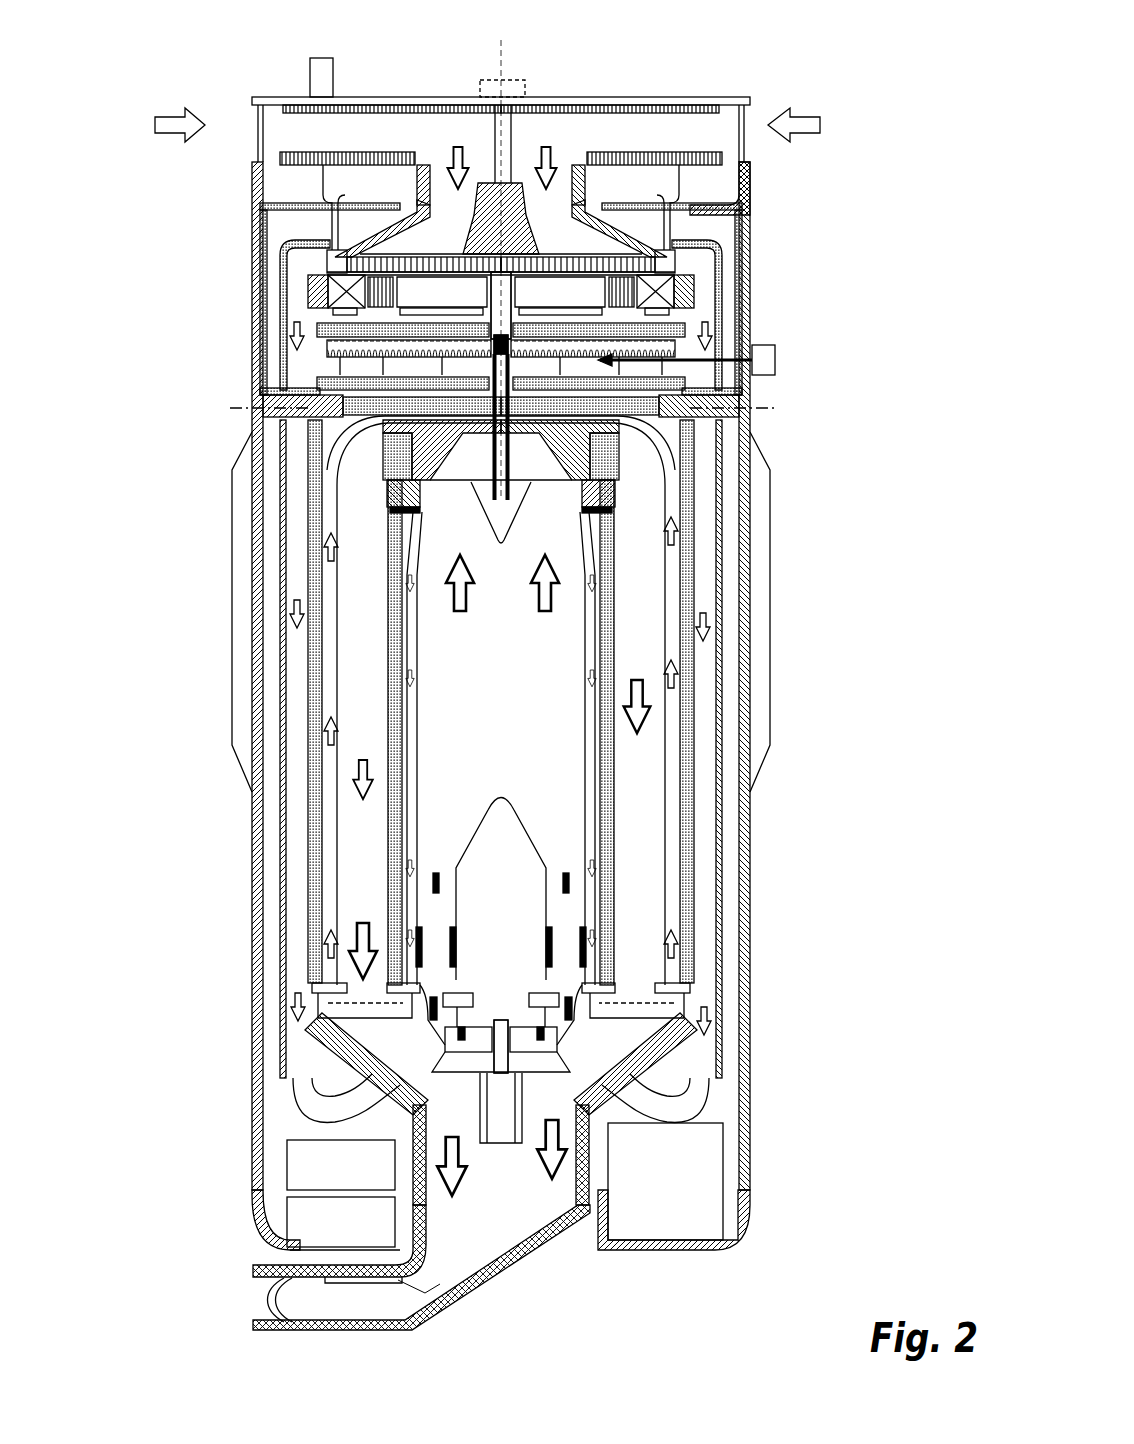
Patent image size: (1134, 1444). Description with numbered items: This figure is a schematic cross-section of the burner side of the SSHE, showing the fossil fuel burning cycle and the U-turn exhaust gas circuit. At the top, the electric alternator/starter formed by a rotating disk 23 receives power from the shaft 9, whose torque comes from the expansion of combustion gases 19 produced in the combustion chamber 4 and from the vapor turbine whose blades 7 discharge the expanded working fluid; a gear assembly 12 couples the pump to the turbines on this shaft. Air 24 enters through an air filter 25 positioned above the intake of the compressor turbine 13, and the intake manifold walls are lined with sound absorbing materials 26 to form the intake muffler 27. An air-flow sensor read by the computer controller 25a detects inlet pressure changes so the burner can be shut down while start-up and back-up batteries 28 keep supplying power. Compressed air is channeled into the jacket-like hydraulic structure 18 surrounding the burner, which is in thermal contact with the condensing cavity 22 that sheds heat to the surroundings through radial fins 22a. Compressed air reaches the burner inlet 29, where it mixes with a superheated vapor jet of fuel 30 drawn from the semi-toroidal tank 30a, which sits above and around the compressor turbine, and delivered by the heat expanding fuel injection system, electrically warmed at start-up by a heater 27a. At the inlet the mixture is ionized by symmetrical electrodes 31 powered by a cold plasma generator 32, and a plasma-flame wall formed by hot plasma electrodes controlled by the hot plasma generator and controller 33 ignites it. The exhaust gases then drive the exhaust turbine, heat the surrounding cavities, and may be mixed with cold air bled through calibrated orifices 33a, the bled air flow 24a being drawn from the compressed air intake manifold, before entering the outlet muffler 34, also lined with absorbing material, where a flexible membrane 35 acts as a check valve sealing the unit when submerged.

The combustion chamber 4 is at (505, 770).
The blades 7 is at (345, 352).
The shaft 9 is at (640, 410).
The gear assembly 12 is at (405, 248).
The compressor turbine 13 is at (557, 218).
The jacket-like hydraulic structure 18 is at (300, 521).
The combustion gases 19 is at (647, 700).
The condensing cavity 22 is at (273, 590).
The fins 22a is at (768, 622).
The alternator/starter 23 is at (593, 293).
The air 24 is at (158, 125).
The combustion air outlet 24a is at (720, 1012).
The air filter 25 is at (253, 163).
The computer controller 25a is at (700, 370).
The sound absorbing materials 26 is at (367, 152).
The intake muffler 27 is at (623, 98).
The heater 27a is at (600, 1057).
The start-up and back-up batteries 28 is at (685, 1170).
The burner inlet 29 is at (580, 975).
The fuel 30 is at (653, 187).
The semi-toroidal tank 30a is at (752, 207).
The symmetrical electrodes 31 is at (557, 935).
The cold plasma generator 32 is at (570, 878).
The hot plasma generator and controller 33 is at (310, 1222).
The calibrated orifices 33a is at (420, 1065).
The muffler 34 is at (563, 1240).
The flexible membrane 35 is at (268, 1300).